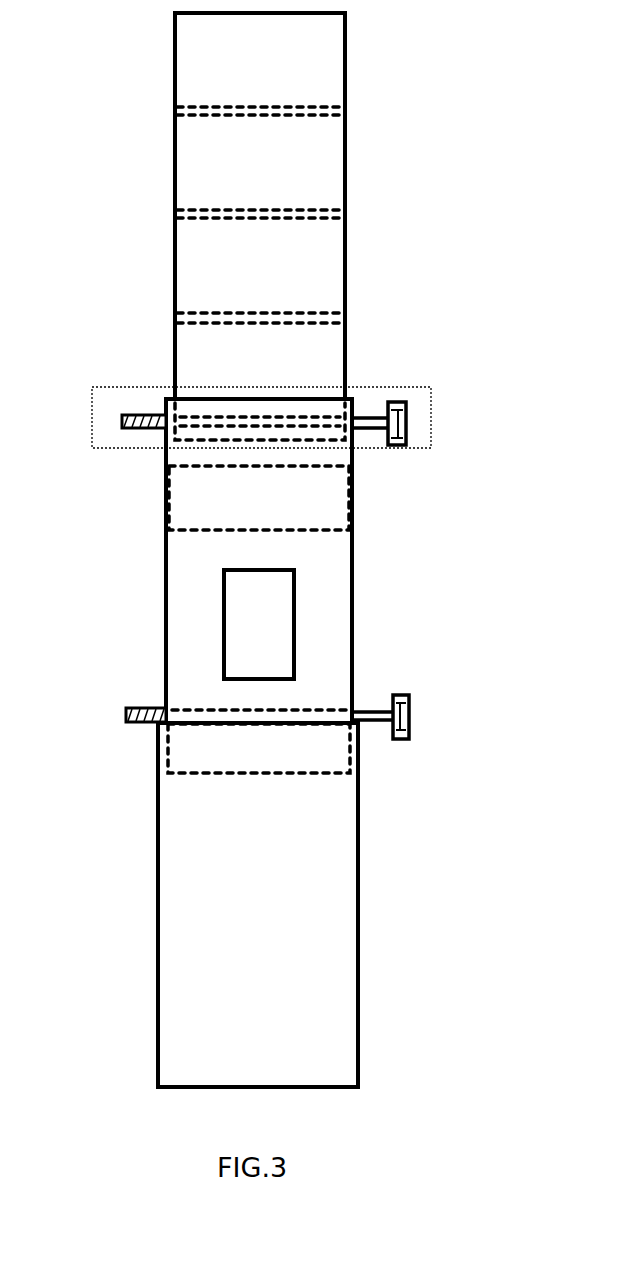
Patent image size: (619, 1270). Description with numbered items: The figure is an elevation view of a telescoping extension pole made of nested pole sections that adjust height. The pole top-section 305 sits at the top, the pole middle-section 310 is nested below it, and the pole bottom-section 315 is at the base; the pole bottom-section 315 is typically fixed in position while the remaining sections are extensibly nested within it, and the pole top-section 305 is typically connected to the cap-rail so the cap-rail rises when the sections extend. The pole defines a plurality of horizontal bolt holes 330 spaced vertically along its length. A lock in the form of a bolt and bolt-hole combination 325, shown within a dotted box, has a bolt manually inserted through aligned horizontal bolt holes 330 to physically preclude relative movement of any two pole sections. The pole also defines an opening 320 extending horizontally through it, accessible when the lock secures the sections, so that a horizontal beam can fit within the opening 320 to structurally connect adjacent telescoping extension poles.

The pole top-section 305 is at (345, 177).
The pole middle-section 310 is at (352, 560).
The pole bottom-section 315 is at (358, 910).
The opening 320 is at (165, 503).
The bolt and bolt-hole combination 325 is at (431, 428).
The horizontal bolt holes 330 is at (164, 104).